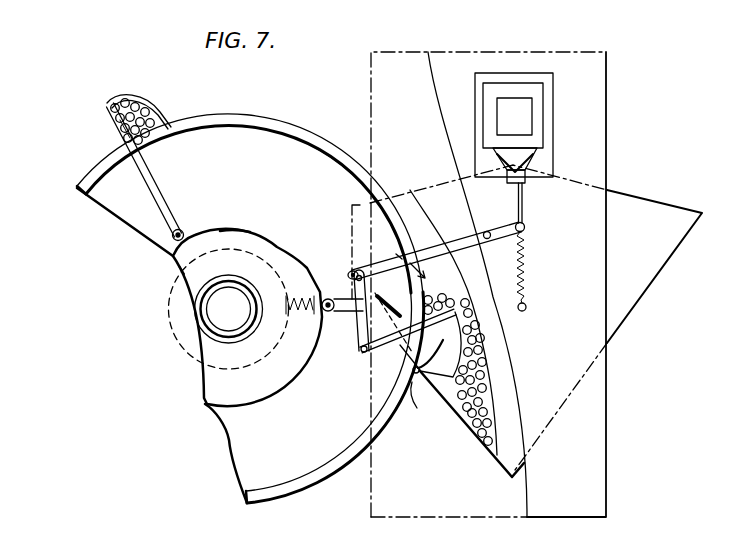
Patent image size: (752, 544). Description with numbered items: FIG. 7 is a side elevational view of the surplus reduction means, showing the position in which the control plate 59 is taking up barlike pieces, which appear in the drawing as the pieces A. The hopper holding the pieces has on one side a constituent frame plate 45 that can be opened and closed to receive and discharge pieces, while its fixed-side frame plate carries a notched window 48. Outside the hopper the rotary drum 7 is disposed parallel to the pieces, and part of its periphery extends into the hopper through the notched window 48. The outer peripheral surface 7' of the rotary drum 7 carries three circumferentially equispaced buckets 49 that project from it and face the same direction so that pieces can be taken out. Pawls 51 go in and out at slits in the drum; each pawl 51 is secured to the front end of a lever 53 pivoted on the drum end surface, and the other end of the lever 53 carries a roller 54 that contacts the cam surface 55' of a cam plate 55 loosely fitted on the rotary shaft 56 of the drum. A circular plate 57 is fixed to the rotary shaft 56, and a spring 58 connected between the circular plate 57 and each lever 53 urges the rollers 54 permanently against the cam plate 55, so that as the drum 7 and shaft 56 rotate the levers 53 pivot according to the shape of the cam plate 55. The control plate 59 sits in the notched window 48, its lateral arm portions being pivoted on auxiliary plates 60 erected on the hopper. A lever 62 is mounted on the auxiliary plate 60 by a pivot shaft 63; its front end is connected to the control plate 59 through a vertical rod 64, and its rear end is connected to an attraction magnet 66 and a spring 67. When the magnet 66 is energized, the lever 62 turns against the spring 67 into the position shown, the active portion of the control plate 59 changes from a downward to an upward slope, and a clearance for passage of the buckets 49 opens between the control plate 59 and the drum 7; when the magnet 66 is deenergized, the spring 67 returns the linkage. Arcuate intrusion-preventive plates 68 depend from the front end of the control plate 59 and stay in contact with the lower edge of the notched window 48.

The rotary drum 7 is at (250, 294).
The outer peripheral surface 7' is at (248, 188).
The constituent frame plate 45 is at (540, 422).
The notched window 48 is at (385, 367).
The buckets 49 is at (158, 110).
The pawls 51 is at (122, 128).
The lever 53 is at (155, 197).
The roller 54 is at (183, 228).
The cam plate 55 is at (247, 306).
The cam surface 55' is at (236, 204).
The rotary shaft 56 is at (204, 313).
The circular plate 57 is at (182, 270).
The spring 58 is at (225, 256).
The control plate 59 is at (356, 336).
The auxiliary plate 60 is at (520, 52).
The lever 62 is at (458, 243).
The pivot shaft 63 is at (488, 232).
The vertical rod 64 is at (352, 320).
The attraction magnet 66 is at (517, 120).
The spring 67 is at (526, 266).
The intrusion-preventive plates 68 is at (433, 390).
The articles A is at (131, 102).